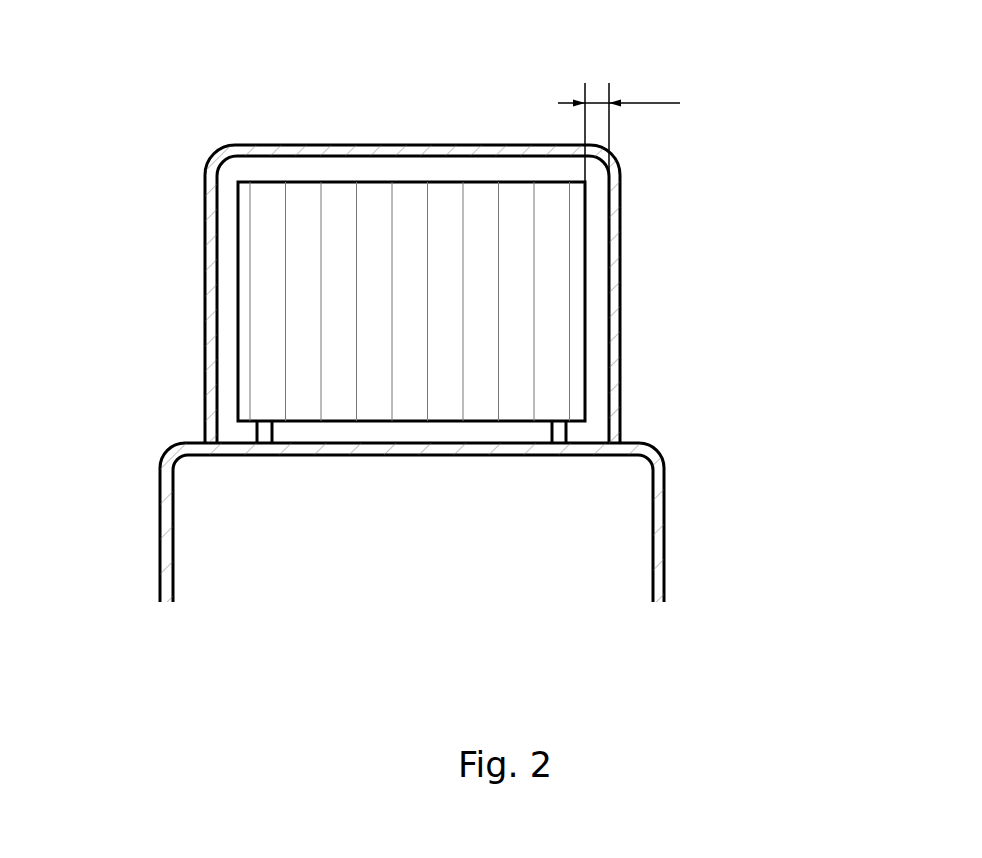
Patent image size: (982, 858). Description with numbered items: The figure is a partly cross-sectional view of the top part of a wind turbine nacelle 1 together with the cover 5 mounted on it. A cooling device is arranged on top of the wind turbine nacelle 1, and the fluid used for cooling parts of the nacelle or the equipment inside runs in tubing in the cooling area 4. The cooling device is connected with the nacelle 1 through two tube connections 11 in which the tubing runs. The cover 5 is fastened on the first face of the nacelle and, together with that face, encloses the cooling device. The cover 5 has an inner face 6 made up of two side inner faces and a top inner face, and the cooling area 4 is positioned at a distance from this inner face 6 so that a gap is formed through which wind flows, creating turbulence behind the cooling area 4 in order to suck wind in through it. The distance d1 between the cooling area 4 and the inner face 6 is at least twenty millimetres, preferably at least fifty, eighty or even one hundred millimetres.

The wind turbine nacelle 1 is at (166, 108).
The cooling area 4 is at (521, 322).
The cover 5 is at (613, 200).
The inner face 6 is at (613, 370).
The tube connections 11 is at (557, 438).
The distance d1 is at (629, 122).